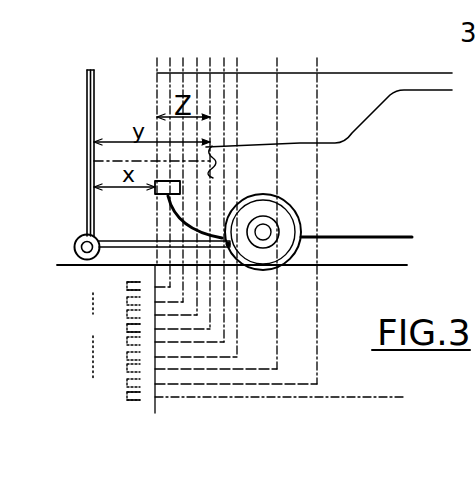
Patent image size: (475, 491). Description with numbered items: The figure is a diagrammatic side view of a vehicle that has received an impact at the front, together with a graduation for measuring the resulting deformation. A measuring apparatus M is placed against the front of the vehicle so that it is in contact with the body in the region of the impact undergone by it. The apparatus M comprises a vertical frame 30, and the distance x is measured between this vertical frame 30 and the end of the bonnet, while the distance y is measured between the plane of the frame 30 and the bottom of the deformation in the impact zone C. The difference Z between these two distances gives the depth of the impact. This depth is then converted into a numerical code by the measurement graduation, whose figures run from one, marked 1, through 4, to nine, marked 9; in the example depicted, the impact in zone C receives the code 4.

The vertical frame 30 is at (87, 122).
The measurement graduation figure 1 is at (132, 287).
The measurement graduation figure 4 is at (132, 327).
The measurement graduation figure 9 is at (132, 393).
The measuring apparatus M is at (340, 123).
The impact zone C is at (186, 160).